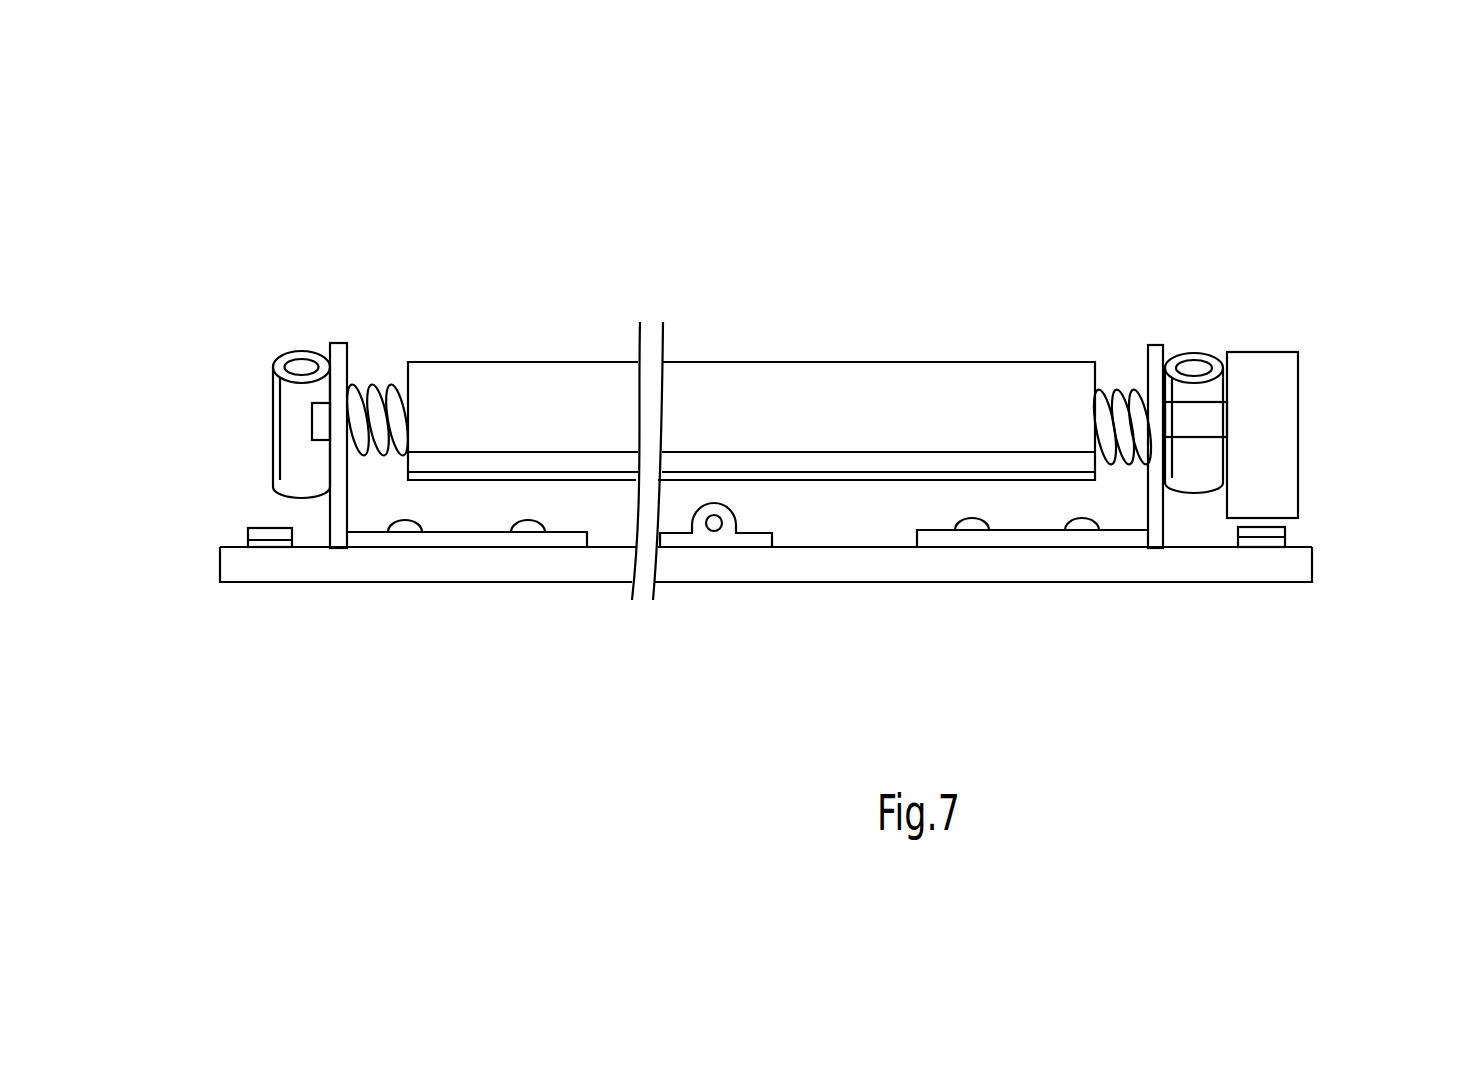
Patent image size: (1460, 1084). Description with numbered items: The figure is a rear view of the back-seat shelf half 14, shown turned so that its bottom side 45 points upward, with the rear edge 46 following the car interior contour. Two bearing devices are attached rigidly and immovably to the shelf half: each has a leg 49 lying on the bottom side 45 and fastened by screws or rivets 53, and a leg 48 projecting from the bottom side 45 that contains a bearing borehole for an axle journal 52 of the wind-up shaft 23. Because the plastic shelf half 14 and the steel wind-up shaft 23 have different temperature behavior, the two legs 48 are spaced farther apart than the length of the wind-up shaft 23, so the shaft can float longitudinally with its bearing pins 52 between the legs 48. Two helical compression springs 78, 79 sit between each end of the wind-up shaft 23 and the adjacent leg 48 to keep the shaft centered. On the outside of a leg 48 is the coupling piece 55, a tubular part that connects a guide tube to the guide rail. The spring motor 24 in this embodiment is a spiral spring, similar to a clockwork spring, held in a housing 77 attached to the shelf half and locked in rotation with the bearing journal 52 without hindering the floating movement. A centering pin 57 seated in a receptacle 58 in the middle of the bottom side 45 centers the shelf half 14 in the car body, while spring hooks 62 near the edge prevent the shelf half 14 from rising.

The back-seat shelf half 14 is at (828, 618).
The wind-up shaft 23 is at (430, 383).
The spring motor 24 is at (1312, 356).
The bottom side 45 is at (858, 550).
The rear edge 46 is at (913, 568).
The leg 48 is at (340, 365).
The leg 49 is at (450, 538).
The axle journal 52 is at (310, 422).
The screws or rivets 53 is at (405, 535).
The coupling piece 55 is at (288, 400).
The centering pin 57 is at (730, 517).
The receptacle 58 is at (748, 550).
The spring hooks 62 is at (268, 530).
The housing 77 is at (1283, 353).
The helical compression spring 78 is at (1123, 385).
The helical compression spring 79 is at (363, 417).